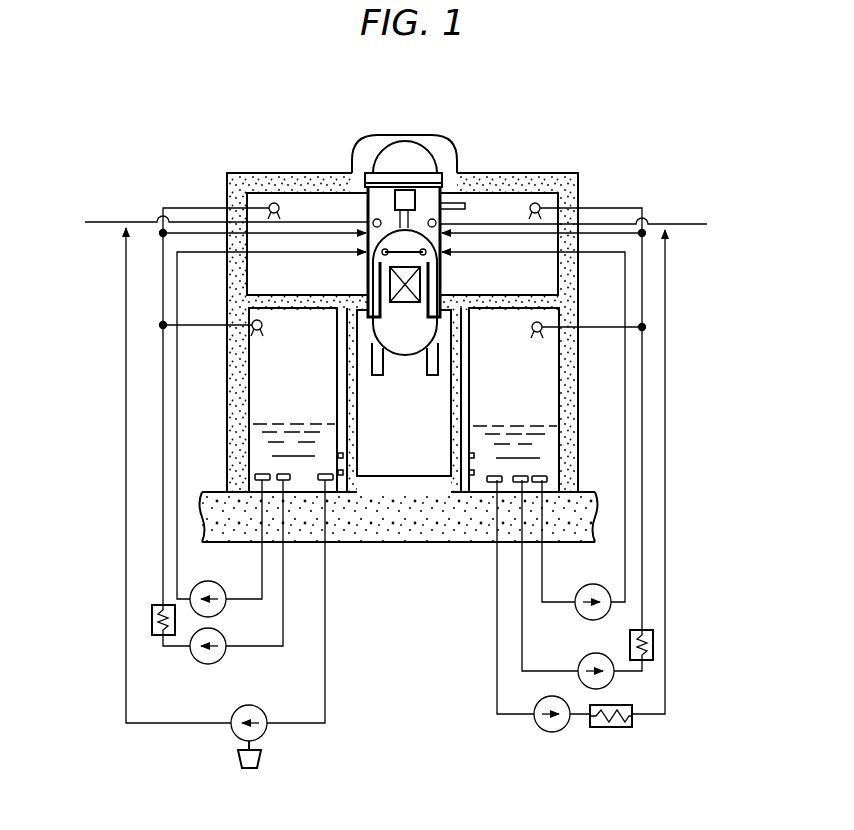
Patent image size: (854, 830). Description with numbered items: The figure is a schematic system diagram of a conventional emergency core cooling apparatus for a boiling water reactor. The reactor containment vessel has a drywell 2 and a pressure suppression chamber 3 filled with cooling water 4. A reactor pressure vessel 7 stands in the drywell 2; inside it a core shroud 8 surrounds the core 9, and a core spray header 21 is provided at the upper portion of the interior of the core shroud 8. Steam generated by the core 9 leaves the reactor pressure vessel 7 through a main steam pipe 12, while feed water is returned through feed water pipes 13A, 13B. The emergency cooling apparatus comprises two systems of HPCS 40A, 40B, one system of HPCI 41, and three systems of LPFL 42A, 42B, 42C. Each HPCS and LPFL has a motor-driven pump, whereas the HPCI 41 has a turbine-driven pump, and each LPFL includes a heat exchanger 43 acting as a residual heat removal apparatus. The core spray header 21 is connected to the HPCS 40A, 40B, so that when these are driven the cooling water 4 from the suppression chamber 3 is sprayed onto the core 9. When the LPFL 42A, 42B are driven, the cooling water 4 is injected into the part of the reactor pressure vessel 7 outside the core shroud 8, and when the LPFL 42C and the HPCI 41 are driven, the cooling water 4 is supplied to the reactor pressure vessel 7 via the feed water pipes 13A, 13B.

The drywell 2 is at (541, 175).
The pressure suppression chamber 3 is at (320, 403).
The cooling water 4 is at (285, 422).
The reactor pressure vessel 7 is at (408, 158).
The core shroud 8 is at (428, 283).
The core 9 is at (410, 302).
The main steam pipe 12 is at (462, 207).
The feed water pipe 13A is at (683, 223).
The feed water pipe 13B is at (108, 221).
The core spray header 21 is at (382, 257).
The HPCS 40A is at (625, 410).
The HPCS 40B is at (177, 405).
The HPCI 41 is at (126, 697).
The LPFL 42A is at (642, 450).
The LPFL 42B is at (163, 498).
The LPFL 42C is at (665, 535).
The heat exchanger 43 is at (152, 620).